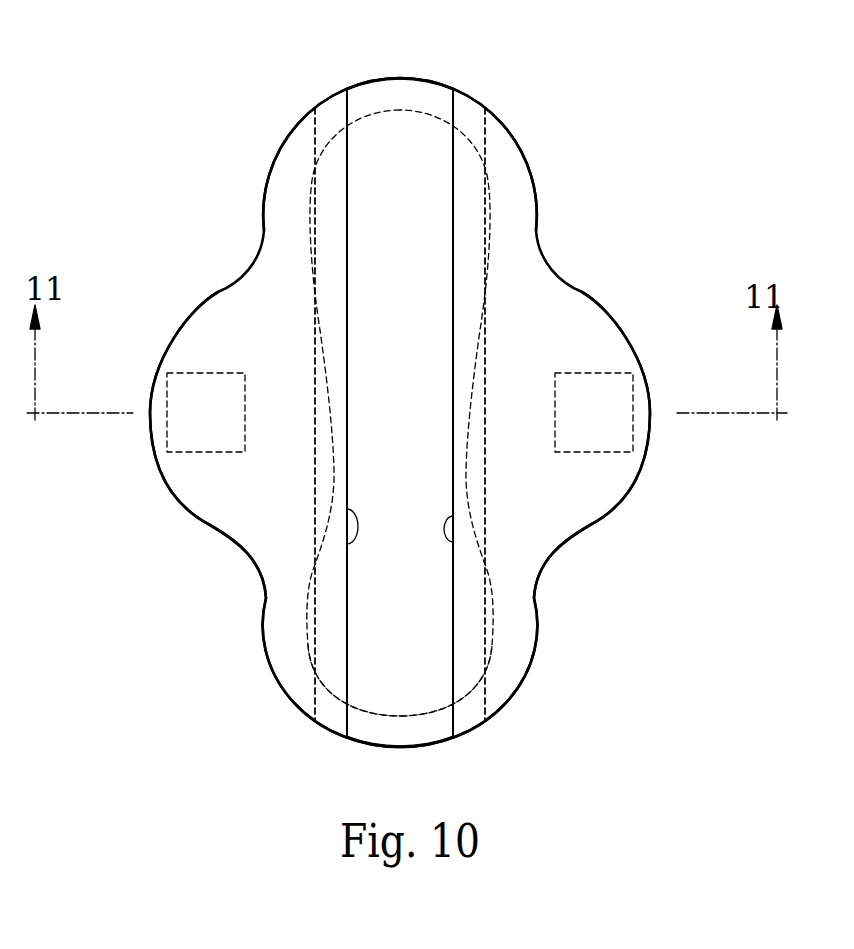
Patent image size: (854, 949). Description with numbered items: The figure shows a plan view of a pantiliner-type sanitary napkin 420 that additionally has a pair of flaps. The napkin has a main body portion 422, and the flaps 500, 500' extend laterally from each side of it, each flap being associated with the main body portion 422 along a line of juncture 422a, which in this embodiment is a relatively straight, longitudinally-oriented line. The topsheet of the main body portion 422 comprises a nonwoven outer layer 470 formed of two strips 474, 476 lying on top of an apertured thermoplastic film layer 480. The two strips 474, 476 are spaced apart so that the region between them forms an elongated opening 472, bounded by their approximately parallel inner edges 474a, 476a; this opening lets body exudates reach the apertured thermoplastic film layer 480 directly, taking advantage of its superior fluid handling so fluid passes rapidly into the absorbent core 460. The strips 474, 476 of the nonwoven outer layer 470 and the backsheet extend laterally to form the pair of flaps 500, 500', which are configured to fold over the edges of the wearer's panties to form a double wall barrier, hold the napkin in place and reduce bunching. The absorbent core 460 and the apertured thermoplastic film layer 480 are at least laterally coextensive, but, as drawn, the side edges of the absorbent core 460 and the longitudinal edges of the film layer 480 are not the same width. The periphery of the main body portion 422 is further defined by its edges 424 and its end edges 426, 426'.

The sanitary napkin 420 is at (520, 120).
The main body portion 422 is at (533, 165).
The line of juncture 422a is at (262, 220).
The rear lobe edges 424 is at (263, 630).
The rear end edge 426 is at (415, 774).
The front end edge 426' is at (417, 51).
The absorbent core 460 is at (495, 593).
The nonwoven outer layer 470 is at (215, 50).
The central region 472 is at (380, 465).
The strip 474 is at (300, 155).
The notch in first strip 474a is at (347, 544).
The strip 476 is at (472, 168).
The notch in second strip 476a is at (454, 543).
The apertured thermoplastic film layer 480 is at (365, 640).
The flaps 500 is at (621, 399).
The left wing / flap 500' is at (181, 396).